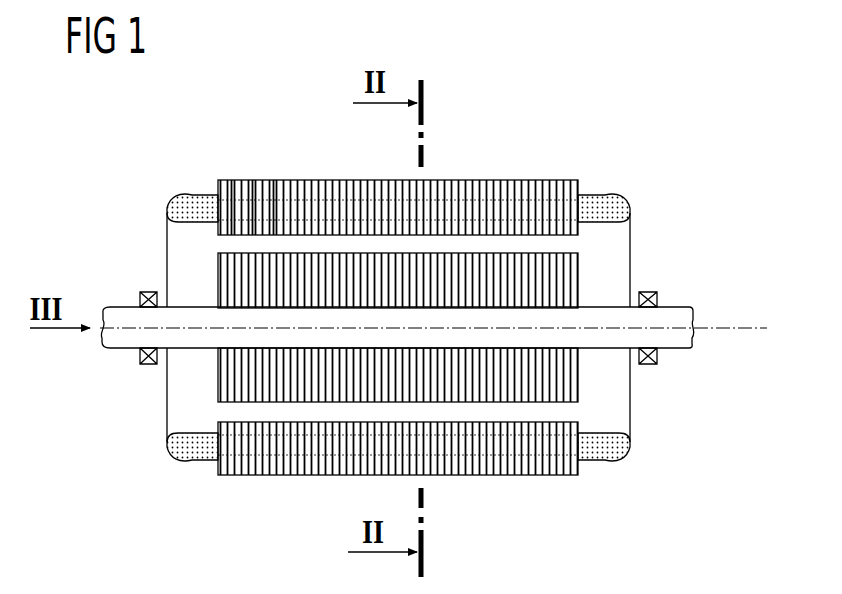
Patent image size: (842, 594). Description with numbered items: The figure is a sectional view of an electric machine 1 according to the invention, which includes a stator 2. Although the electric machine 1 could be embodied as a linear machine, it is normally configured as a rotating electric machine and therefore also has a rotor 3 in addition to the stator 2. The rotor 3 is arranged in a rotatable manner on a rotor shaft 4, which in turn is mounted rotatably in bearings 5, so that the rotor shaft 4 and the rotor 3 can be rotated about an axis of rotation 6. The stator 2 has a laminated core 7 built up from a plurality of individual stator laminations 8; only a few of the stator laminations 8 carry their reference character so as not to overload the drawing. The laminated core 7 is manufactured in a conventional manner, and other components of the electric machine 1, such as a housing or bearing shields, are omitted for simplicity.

The electric machine 1 is at (551, 100).
The stator 2 is at (398, 290).
The rotor 3 is at (517, 253).
The rotor shaft 4 is at (676, 307).
The bearings 5 is at (149, 292).
The axis of rotation 6 is at (756, 328).
The laminated core 7 is at (317, 180).
The stator laminations 8 is at (275, 180).